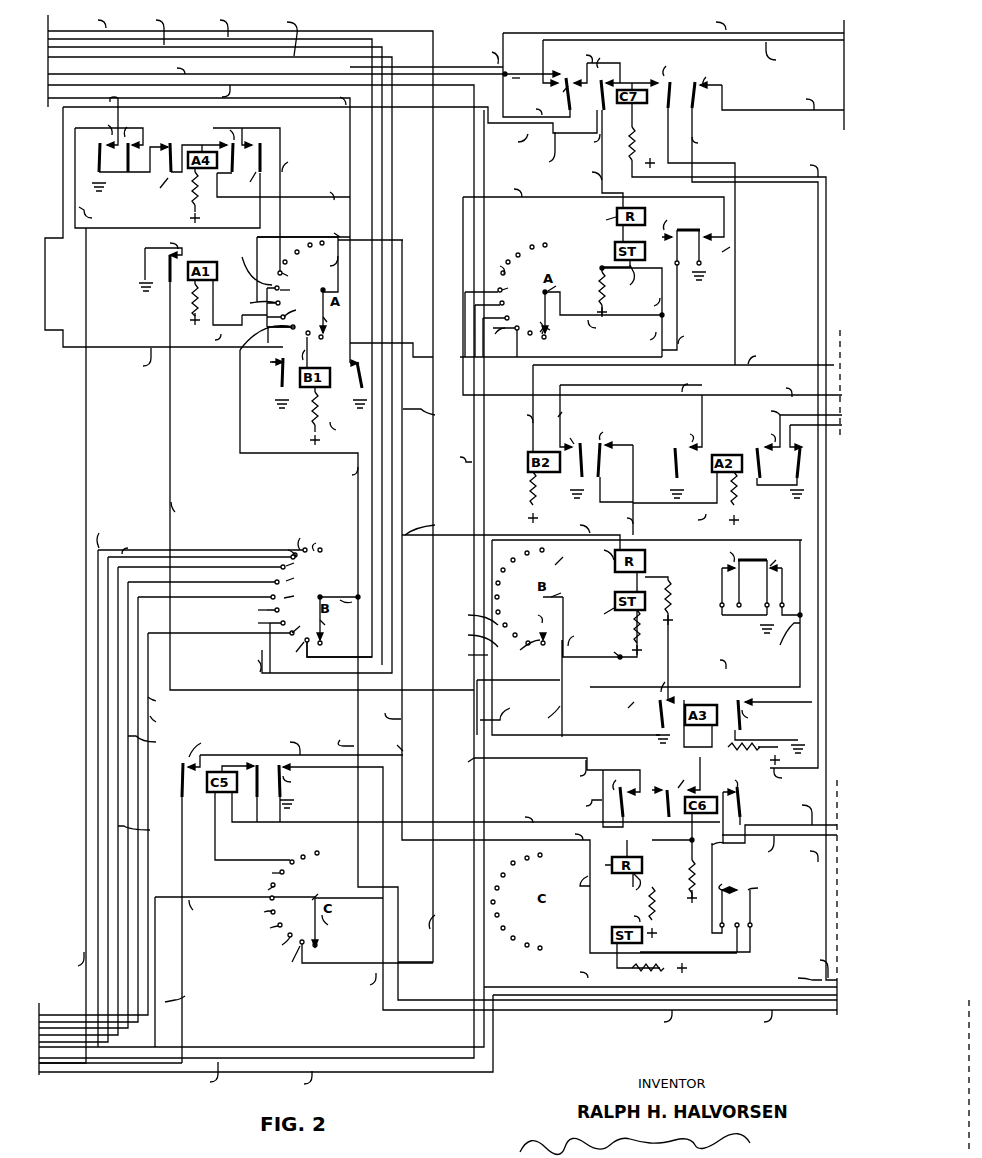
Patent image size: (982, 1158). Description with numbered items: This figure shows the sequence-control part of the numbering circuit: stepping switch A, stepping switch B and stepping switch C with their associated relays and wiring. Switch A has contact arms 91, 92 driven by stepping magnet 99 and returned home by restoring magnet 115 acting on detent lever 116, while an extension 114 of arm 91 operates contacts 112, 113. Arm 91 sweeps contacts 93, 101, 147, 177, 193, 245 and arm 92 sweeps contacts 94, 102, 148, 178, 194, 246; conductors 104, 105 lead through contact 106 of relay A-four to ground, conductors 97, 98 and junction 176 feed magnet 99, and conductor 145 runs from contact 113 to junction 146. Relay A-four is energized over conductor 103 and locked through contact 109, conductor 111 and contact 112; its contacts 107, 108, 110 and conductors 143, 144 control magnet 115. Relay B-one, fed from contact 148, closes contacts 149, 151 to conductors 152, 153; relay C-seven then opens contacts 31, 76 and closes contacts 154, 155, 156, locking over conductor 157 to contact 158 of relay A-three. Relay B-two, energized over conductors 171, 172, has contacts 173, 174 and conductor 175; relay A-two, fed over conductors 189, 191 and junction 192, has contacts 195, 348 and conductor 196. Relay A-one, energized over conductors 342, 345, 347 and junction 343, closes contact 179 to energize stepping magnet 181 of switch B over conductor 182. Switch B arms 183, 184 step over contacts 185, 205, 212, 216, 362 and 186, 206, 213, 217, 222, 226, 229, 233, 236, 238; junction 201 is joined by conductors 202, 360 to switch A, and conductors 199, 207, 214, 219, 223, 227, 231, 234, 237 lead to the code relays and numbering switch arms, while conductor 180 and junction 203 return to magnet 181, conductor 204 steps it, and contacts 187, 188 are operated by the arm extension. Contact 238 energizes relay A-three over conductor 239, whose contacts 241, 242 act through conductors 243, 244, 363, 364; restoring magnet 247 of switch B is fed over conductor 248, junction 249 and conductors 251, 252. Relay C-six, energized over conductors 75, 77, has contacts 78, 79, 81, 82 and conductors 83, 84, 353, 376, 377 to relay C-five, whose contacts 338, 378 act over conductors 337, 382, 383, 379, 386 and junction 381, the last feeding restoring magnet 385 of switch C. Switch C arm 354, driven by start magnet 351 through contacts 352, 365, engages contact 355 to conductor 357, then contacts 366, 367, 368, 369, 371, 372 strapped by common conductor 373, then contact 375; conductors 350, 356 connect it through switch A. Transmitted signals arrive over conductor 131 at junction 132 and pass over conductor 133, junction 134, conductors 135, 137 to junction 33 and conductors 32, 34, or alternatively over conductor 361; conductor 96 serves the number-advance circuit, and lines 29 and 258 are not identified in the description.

The conductor 357 is at (265, 475).
The conductor 214 is at (143, 29).
The conductor 199 is at (207, 25).
The conductor 219 is at (262, 345).
The conductor 34 is at (708, 25).
The conductor 29 is at (781, 56).
The conductor 172 is at (480, 53).
The contact of relay C7 154 is at (574, 58).
The contact of relay C7 155 is at (614, 58).
The contact of relay C7 156 is at (679, 67).
The contact of relay C7 76 is at (715, 77).
The conductor 75 is at (798, 101).
The conductor 137 is at (165, 72).
The conductor 135 is at (372, 129).
The conductor 153 is at (327, 98).
The junction 33 is at (526, 83).
The contact of relay C7 31 is at (556, 96).
The conductor 32 is at (527, 112).
The detent lever 116 is at (129, 100).
The contact of relay A4 107 is at (94, 126).
The contact of relay A4 108 is at (140, 127).
The contact of relay A4 109 is at (217, 132).
The conductor 103 is at (300, 164).
The conductor 105 is at (324, 187).
The contact of relay A4 106 is at (157, 192).
The contact of relay A4 110 is at (240, 186).
The conductor 77 is at (748, 462).
The conductor 133 is at (798, 509).
The conductor 144 is at (507, 143).
The junction 134 is at (581, 144).
The conductor 157 is at (587, 171).
The conductor 111 is at (507, 191).
The restoring magnet 115 is at (598, 221).
The contact of switch A 113 is at (679, 221).
The contact of switch A 112 is at (719, 257).
The conductor 258 is at (100, 217).
The contact of relay A1 179 is at (159, 244).
The conductor 360 is at (236, 253).
The junction 146 is at (321, 233).
The conductor 104 is at (324, 261).
The contact of switch A 102 is at (300, 276).
The contact of switch A 94 is at (295, 291).
The contact of switch A 101 is at (489, 268).
The contact of switch A 245 is at (476, 286).
The contact of switch A 93 is at (515, 286).
The extension of switch arm 114 is at (570, 437).
The stepping magnet 99 is at (620, 280).
The contact of switch A 193 is at (511, 302).
The conductor 98 is at (645, 308).
The contact of switch A 194 is at (305, 307).
The contact of switch A 246 is at (235, 304).
The contact arm 92 is at (334, 323).
The terminal of switch A 147 is at (529, 322).
The contact arm 91 is at (556, 331).
The conductor 97 is at (602, 330).
The junction 176 is at (638, 342).
The conductor 145 is at (696, 334).
The contact of switch A 177 is at (501, 339).
The conductor 342 is at (203, 341).
The contact of switch A 178 is at (282, 334).
The contact of switch A 148 is at (317, 358).
The junction 343 is at (217, 361).
The contact of relay B1 149 is at (261, 361).
The conductor 152 is at (131, 362).
The conductor 345 is at (767, 356).
The conductor 196 is at (700, 384).
The conductor 96 is at (777, 390).
The conductor 347 is at (760, 411).
The contact of relay A2 348 is at (758, 434).
The conductor 251 is at (434, 416).
The conductor 252 is at (581, 555).
The conductor 171 is at (516, 416).
The conductor 175 is at (575, 409).
The contact of relay B2 173 is at (577, 433).
The contact of relay B2 174 is at (615, 432).
The contact of relay A2 195 is at (677, 432).
The contact of relay B1 151 is at (347, 431).
The conductor 202 is at (340, 473).
The conductor 191 is at (616, 517).
The conductor 189 is at (686, 519).
The conductor 182 is at (188, 512).
The conductor 237 is at (113, 534).
The contact of switch B 236 is at (299, 535).
The junction 249 is at (435, 525).
The conductor 248 is at (569, 524).
The conductor 234 is at (140, 546).
The contact of switch B 233 is at (276, 546).
The contact of switch B 238 is at (328, 546).
The restoring magnet 247 is at (593, 550).
The contact of switch B 187 is at (717, 552).
The contact of switch B 188 is at (774, 554).
The contact of switch B 229 is at (305, 566).
The contact of switch B 226 is at (305, 581).
The contact of switch B 362 is at (545, 567).
The contact of switch B 222 is at (304, 598).
The junction 201 is at (339, 594).
The contact of switch B 217 is at (247, 609).
The contact of switch B 213 is at (249, 624).
The contact of switch B 206 is at (299, 620).
The contact of switch B 216 is at (467, 615).
The switch arm 183 is at (526, 614).
The stepping magnet 181 is at (595, 614).
The contact of switch B 212 is at (467, 636).
The switch arm 184 is at (335, 630).
The conductor 180 is at (587, 634).
The contact of switch B 205 is at (462, 656).
The contact of switch B 185 is at (516, 652).
The junction 203 is at (602, 649).
The junction 192 is at (779, 640).
The contact of switch B 186 is at (286, 655).
The contact of relay A3 241 is at (678, 682).
The conductor 223 is at (167, 701).
The conductor 207 is at (168, 724).
The conductor 227 is at (157, 743).
The contact of relay C5 378 is at (210, 745).
The conductor 382 is at (279, 744).
The conductor 356 is at (551, 877).
The conductor 379 is at (384, 708).
The junction 381 is at (385, 744).
The conductor 363 is at (503, 706).
The conductor 204 is at (368, 899).
The contact of relay A3 242 is at (616, 711).
The contact of relay A3 158 is at (760, 718).
The contact of relay C5 338 is at (302, 783).
The conductor 239 is at (455, 761).
The conductor 244 is at (567, 772).
The contact of relay C6 78 is at (625, 780).
The contact of relay C6 82 is at (664, 779).
The contact of relay C6 79 is at (691, 779).
The contact of relay C6 81 is at (727, 779).
The conductor 243 is at (579, 801).
The conductor 83 is at (795, 811).
The conductor 377 is at (513, 816).
The conductor 386 is at (563, 834).
The conductor 376 is at (662, 851).
The conductor 353 is at (724, 851).
The conductor 84 is at (759, 848).
The conductor 231 is at (149, 831).
The contact of switch C 375 is at (276, 849).
The conductor 364 is at (573, 875).
The restoring magnet 385 is at (623, 888).
The contact of switch C 352 is at (732, 878).
The contact of switch C 365 is at (768, 888).
The contact of switch C 372 is at (260, 873).
The contact of switch C 371 is at (257, 891).
The contact of switch C 369 is at (300, 898).
The common conductor 373 is at (205, 913).
The contact of switch C 368 is at (252, 911).
The contact of switch C 367 is at (259, 929).
The switch arm 354 is at (340, 927).
The start magnet 351 is at (622, 916).
The contact of switch C 366 is at (271, 946).
The contact of switch C 355 is at (281, 959).
The conductor 143 is at (66, 964).
The conductor 383 is at (190, 990).
The conductor 350 is at (505, 1002).
The conductor 337 is at (568, 971).
The conductor 361 is at (809, 965).
The junction 132 is at (794, 976).
The conductor 131 is at (292, 1082).